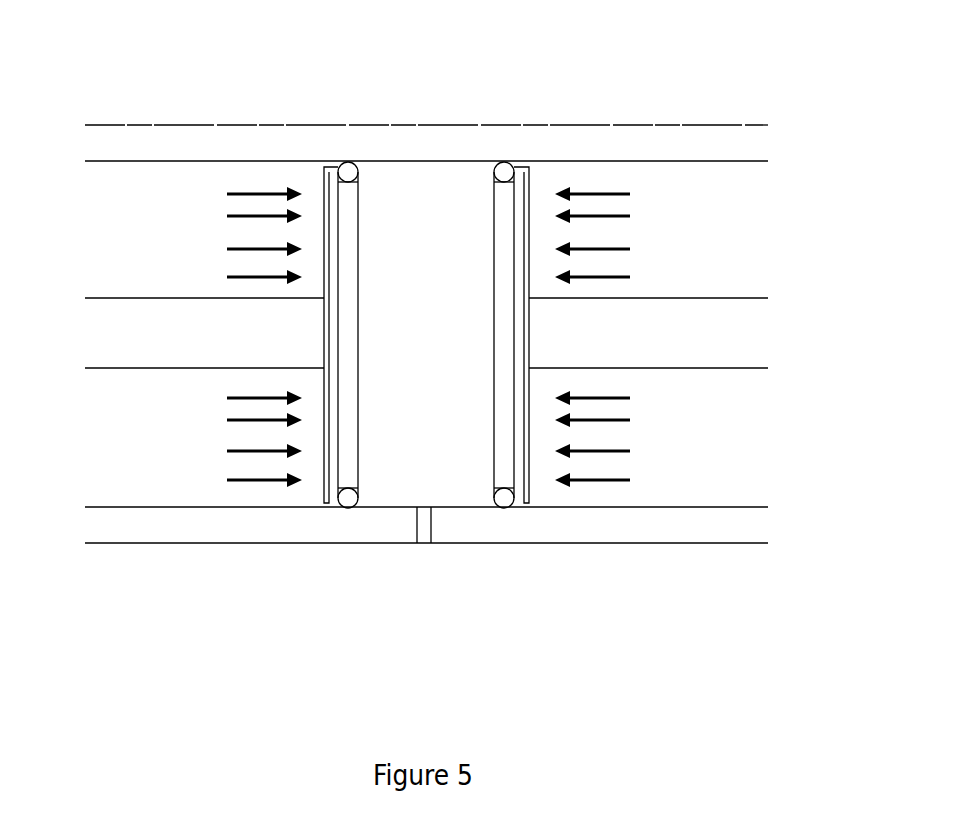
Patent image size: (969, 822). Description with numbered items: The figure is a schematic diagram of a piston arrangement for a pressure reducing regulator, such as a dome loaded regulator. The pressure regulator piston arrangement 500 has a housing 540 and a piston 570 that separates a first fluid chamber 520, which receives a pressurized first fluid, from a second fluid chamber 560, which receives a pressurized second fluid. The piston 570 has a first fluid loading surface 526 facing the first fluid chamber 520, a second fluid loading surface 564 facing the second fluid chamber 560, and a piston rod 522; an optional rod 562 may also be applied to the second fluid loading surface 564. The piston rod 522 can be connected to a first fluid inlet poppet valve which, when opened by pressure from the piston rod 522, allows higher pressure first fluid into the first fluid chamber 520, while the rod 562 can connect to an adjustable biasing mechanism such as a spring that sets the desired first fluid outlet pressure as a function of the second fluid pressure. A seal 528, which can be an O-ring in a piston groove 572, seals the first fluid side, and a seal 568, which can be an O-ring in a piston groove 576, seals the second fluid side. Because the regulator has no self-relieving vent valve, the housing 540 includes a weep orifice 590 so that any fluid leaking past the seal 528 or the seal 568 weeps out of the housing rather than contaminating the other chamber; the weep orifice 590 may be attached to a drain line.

The pressure regulator piston arrangement 500 is at (174, 101).
The first fluid chamber 520 is at (622, 235).
The piston rod 522 is at (648, 392).
The first fluid loading surface 526 is at (530, 190).
The seal 528 is at (498, 161).
The housing 540 is at (245, 528).
The second fluid chamber 560 is at (228, 235).
The rod 562 is at (204, 392).
The second fluid loading surface 564 is at (323, 190).
The seal 568 is at (349, 161).
The piston 570 is at (426, 343).
The piston groove 572 is at (508, 417).
The piston groove 576 is at (347, 417).
The weep orifice 590 is at (476, 558).